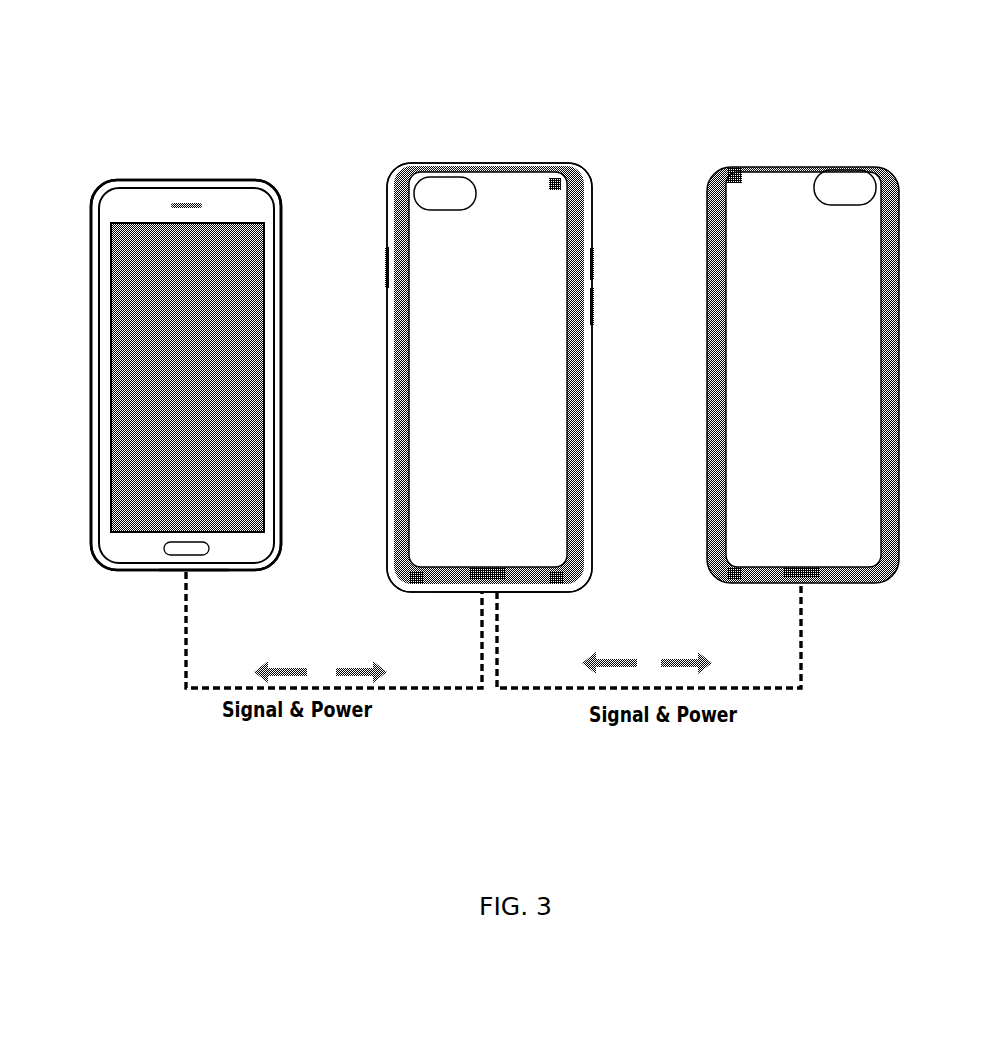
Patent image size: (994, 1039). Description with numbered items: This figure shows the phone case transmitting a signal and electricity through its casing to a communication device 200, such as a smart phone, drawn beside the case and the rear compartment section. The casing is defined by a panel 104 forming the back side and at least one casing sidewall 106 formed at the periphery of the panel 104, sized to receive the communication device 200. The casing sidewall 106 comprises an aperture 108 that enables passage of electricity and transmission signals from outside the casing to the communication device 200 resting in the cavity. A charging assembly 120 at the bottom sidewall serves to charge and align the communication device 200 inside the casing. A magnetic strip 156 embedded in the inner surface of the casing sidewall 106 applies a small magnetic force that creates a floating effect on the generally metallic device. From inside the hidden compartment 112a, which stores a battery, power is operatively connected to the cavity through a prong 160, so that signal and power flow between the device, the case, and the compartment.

The communication device 200 is at (137, 217).
The casing sidewall 106 is at (232, 181).
The panel 104 is at (507, 421).
The aperture 108 is at (198, 573).
The charging assembly 120 is at (470, 577).
The magnetic strip 156 is at (555, 177).
The hidden compartment 112a is at (865, 497).
The prong 160 is at (787, 580).